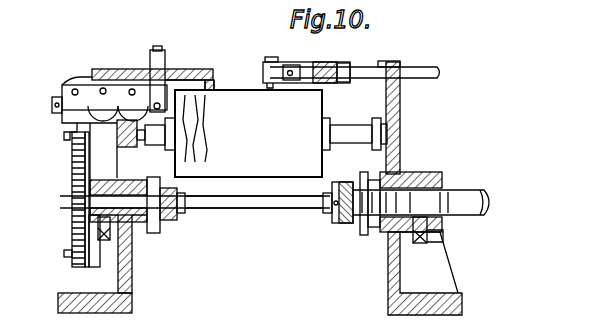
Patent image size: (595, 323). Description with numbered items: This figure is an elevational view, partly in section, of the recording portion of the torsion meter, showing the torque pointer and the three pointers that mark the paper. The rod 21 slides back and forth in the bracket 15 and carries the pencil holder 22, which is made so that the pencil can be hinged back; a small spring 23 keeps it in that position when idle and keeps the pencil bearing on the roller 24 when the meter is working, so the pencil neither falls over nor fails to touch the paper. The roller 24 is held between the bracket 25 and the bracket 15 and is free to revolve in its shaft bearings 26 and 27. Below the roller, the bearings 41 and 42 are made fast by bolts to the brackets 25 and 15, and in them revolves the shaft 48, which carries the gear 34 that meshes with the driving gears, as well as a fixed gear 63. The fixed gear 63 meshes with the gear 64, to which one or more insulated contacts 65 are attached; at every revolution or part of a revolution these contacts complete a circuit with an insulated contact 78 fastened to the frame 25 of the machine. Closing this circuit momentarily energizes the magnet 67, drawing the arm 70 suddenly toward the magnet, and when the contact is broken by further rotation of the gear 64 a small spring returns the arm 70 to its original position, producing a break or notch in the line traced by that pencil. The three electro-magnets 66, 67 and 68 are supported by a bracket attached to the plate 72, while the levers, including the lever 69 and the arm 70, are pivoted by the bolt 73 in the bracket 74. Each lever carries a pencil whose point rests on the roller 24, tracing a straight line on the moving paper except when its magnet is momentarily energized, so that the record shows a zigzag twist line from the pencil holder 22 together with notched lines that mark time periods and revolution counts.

The bracket 15 is at (402, 100).
The rod 21 is at (422, 68).
The pencil holder 22 is at (262, 88).
The small spring 23 is at (340, 64).
The roller 24 is at (287, 165).
The bracket 25 is at (135, 290).
The shaft bearing 26 is at (150, 142).
The shaft bearing 27 is at (343, 128).
The gear 34 is at (338, 222).
The bearing 41 is at (160, 226).
The bearing 42 is at (364, 236).
The shaft 48 is at (258, 204).
The fixed gear 63 is at (90, 232).
The gear 64 is at (72, 262).
The insulated contact 65 is at (68, 250).
The electro-magnet 66 is at (72, 84).
The magnet 67 is at (104, 84).
The electro-magnet 68 is at (133, 84).
The lever 69 is at (216, 76).
The arm 70 is at (200, 100).
The plate 72 is at (53, 114).
The bolt 73 is at (162, 54).
The bracket 74 is at (168, 66).
The insulated contact 78 is at (63, 135).